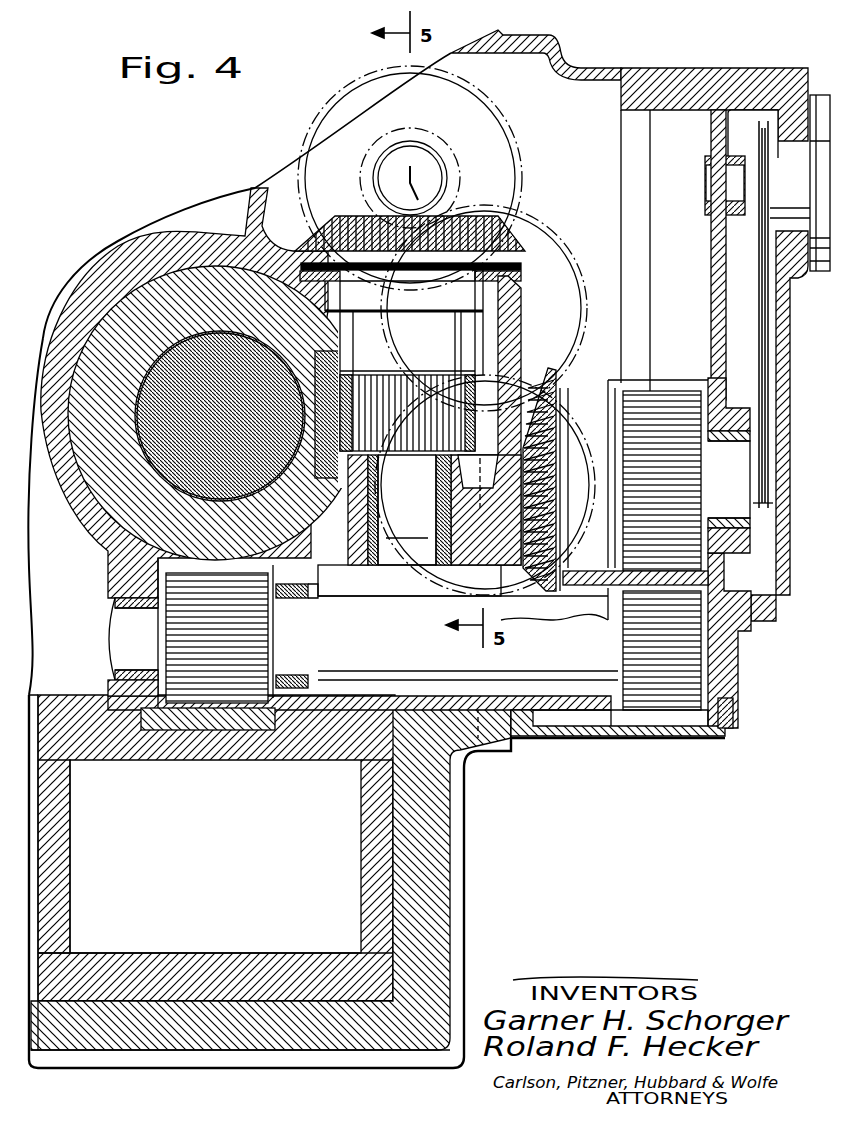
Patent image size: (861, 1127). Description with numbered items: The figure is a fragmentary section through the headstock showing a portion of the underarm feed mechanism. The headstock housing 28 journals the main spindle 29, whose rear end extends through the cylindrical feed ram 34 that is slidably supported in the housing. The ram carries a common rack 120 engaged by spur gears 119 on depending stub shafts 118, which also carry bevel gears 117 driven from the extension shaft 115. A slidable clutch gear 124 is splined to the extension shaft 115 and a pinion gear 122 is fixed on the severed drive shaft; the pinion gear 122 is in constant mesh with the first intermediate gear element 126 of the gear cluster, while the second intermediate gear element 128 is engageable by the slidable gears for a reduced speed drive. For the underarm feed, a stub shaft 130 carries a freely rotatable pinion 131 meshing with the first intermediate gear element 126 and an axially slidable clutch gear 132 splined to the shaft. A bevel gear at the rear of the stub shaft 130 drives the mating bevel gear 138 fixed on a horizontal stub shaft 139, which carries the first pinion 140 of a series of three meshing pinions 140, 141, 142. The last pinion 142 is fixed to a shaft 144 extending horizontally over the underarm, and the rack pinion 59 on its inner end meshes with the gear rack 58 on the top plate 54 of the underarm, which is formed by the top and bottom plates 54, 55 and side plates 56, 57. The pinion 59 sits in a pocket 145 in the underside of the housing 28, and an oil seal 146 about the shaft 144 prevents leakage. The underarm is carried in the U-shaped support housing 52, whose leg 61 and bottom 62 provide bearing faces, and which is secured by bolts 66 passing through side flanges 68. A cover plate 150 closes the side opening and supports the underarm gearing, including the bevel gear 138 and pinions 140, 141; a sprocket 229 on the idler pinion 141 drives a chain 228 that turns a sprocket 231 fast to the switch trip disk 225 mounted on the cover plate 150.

The housing 28 is at (572, 64).
The main spindle 29 is at (165, 343).
The feed ram 34 is at (187, 268).
The underarm support housing 52 is at (458, 913).
The top plate 54 is at (225, 752).
The bottom plate 55 is at (215, 975).
The side plate 56 is at (62, 862).
The side plate 57 is at (362, 856).
The gear rack 58 is at (265, 676).
The pinion 59 is at (258, 628).
The leg 61 is at (440, 838).
The bottom 62 is at (300, 1060).
The bolts 66 is at (503, 740).
The side flanges 68 is at (497, 752).
The extension shaft 115 is at (428, 145).
The bevel gears 117 is at (352, 210).
The stub shafts 118 is at (455, 290).
The spur gears 119 is at (418, 367).
The rack 120 is at (410, 318).
The pinion gear 122 is at (437, 135).
The slidable clutch gear 124 is at (507, 126).
The first intermediate gear element 126 is at (556, 232).
The second intermediate gear element 128 is at (420, 333).
The stub shaft 130 is at (415, 505).
The pinion 131 is at (430, 525).
The slidable clutch gear 132 is at (393, 557).
The bevel gear 138 is at (545, 367).
The horizontal stub shaft 139 is at (733, 527).
The pinion 140 is at (662, 407).
The idler pinion 141 is at (648, 390).
The pinion 142 is at (693, 648).
The shaft 144 is at (550, 672).
The pocket 145 is at (268, 588).
The oil seal 146 is at (300, 590).
The cover plate 150 is at (672, 67).
The switch trip disk 225 is at (812, 90).
The drive chain 228 is at (753, 300).
The sprocket 229 is at (745, 495).
The sprocket 231 is at (752, 138).